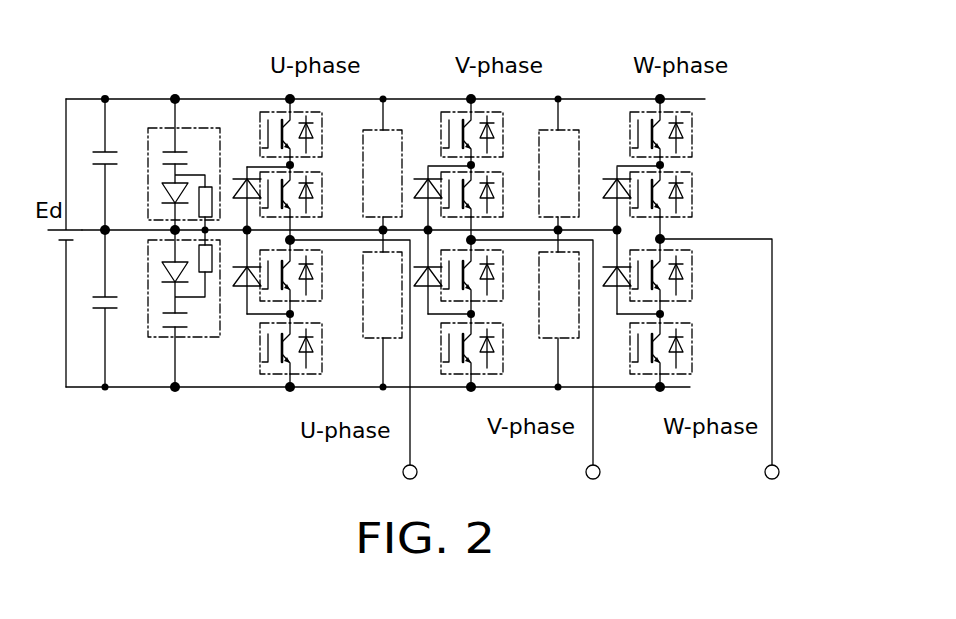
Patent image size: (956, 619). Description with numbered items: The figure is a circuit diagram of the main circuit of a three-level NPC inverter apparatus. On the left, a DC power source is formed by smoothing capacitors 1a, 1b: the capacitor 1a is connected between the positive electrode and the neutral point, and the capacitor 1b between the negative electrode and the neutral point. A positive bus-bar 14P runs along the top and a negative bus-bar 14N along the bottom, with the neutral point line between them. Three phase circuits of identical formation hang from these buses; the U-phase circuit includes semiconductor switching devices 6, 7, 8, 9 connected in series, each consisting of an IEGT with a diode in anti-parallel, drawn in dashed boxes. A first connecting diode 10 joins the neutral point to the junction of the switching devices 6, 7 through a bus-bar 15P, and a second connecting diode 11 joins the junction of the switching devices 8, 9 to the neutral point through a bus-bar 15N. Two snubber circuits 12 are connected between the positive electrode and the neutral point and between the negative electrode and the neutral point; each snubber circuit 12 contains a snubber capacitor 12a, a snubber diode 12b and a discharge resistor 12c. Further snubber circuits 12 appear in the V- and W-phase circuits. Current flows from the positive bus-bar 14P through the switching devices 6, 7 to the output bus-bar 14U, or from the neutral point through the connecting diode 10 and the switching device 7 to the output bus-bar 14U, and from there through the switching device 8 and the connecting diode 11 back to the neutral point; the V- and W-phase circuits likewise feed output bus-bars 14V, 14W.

The smoothing capacitor 1a is at (103, 150).
The smoothing capacitor 1b is at (100, 312).
The semiconductor switching device 6 is at (322, 125).
The semiconductor switching device 7 is at (322, 190).
The semiconductor switching device 8 is at (323, 288).
The semiconductor switching device 9 is at (322, 370).
The first connecting diode 10 is at (427, 198).
The second connecting diode 11 is at (240, 294).
The snubber circuit 12 is at (361, 211).
The snubber capacitor 12a is at (180, 152).
The snubber diode 12b is at (165, 192).
The discharge resistor 12c is at (212, 197).
The positive bus-bar 14P is at (117, 97).
The negative bus-bar 14N is at (205, 389).
The bus-bar 15P is at (250, 166).
The bus-bar 15N is at (248, 388).
The output bus-bar 14U is at (378, 359).
The output bus-bar 14V is at (560, 359).
The output bus-bar 14W is at (719, 359).